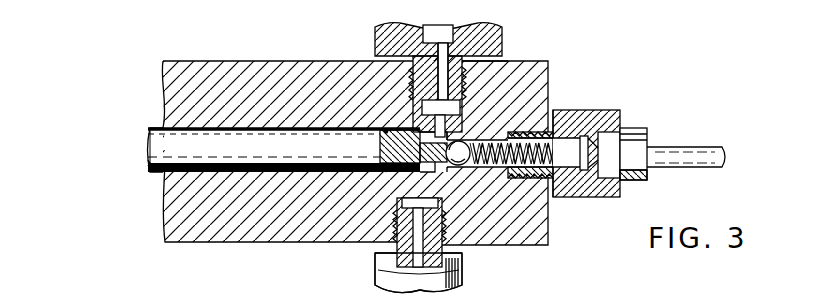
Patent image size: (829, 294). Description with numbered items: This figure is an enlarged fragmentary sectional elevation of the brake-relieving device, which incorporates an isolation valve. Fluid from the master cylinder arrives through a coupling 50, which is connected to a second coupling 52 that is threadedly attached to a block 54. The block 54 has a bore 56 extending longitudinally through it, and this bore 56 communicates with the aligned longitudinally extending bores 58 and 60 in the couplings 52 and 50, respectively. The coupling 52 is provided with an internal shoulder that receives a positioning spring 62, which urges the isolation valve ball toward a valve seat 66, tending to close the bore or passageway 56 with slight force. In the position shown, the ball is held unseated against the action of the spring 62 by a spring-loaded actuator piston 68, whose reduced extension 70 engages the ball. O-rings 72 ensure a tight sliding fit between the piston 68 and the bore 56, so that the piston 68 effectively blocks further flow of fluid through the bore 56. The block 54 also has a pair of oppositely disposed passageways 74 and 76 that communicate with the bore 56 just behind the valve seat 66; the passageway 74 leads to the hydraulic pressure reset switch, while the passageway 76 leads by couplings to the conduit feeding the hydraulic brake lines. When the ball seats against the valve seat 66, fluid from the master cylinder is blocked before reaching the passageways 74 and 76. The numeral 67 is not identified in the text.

The coupling 50 is at (636, 180).
The second coupling 52 is at (583, 112).
The block 54 is at (517, 238).
The bore 56 is at (260, 128).
The bore 58 is at (548, 62).
The bore 60 is at (598, 150).
The positioning spring 62 is at (540, 100).
The valve seat 66 is at (463, 133).
The body portion 67 is at (510, 95).
The spring-loaded actuator piston 68 is at (178, 130).
The reduced extension 70 is at (440, 166).
The O-rings 72 is at (388, 133).
The passageway 74 is at (430, 117).
The passageway 76 is at (400, 178).